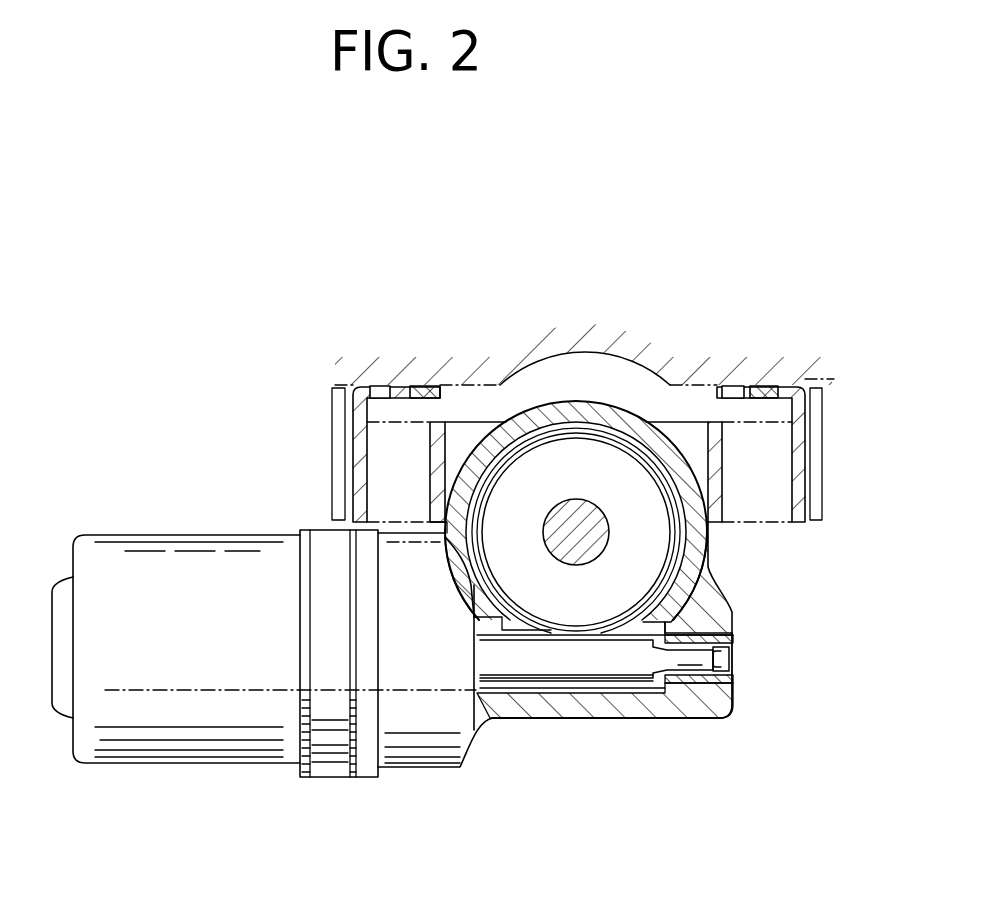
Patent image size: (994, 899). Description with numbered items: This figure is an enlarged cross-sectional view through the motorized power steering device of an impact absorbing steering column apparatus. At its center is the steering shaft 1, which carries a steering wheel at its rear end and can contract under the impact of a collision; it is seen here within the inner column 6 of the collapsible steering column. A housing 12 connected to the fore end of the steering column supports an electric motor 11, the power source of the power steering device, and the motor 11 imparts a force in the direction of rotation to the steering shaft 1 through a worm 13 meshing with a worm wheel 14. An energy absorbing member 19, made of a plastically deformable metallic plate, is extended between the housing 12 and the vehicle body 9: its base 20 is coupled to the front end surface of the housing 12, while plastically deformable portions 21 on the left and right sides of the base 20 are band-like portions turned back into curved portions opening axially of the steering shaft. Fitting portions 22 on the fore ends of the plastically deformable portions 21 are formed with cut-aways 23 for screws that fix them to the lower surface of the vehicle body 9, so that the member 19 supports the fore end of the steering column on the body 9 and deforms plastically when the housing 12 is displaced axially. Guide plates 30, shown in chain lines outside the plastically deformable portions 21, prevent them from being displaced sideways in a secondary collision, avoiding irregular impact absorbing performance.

The steering shaft 1 is at (604, 557).
The inner column 6 is at (682, 549).
The vehicle body 9 is at (808, 376).
The electric motor 11 is at (130, 563).
The housing 12 is at (713, 720).
The worm 13 is at (560, 662).
The worm wheel 14 is at (623, 622).
The energy absorbing member 19 is at (784, 385).
The base 20 is at (472, 422).
The plastically deformable portion 21 is at (360, 426).
The fitting portion 22 is at (378, 386).
The cut-away 23 is at (408, 386).
The guide plate 30 is at (331, 485).